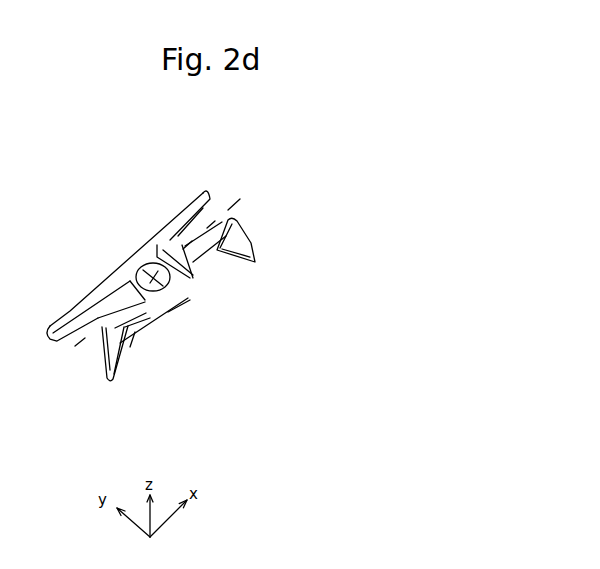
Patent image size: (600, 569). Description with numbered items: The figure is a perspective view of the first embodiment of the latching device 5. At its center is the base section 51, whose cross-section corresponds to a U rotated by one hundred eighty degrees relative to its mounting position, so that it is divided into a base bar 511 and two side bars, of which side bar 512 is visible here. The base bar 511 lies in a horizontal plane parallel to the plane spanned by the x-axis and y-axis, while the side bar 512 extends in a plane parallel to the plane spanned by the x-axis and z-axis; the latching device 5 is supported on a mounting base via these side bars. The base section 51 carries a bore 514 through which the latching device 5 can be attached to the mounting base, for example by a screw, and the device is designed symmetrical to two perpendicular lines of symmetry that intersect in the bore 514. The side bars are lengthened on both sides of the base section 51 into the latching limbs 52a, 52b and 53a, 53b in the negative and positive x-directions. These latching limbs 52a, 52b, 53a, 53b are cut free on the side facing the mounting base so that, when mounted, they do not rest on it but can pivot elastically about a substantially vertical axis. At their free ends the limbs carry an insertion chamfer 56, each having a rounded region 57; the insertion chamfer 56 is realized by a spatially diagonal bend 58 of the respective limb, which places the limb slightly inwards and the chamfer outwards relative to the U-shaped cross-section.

The latching device 5 is at (227, 168).
The base section 51 is at (153, 298).
The base bar 511 is at (168, 312).
The side bar 512 is at (188, 298).
The bore 514 is at (147, 252).
The latching limb 52a is at (135, 330).
The latching limb 52b is at (207, 270).
The latching limb 53a is at (93, 290).
The latching limb 53b is at (170, 222).
The insertion chamfer 56 is at (235, 226).
The rounded region 57 is at (232, 219).
The bend 58 is at (237, 252).